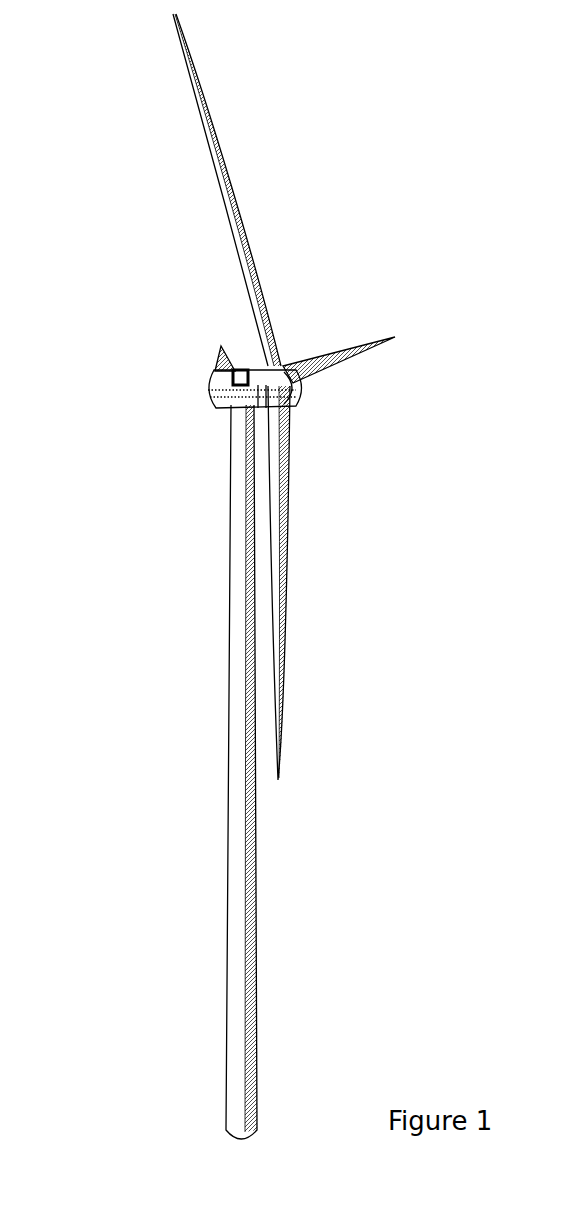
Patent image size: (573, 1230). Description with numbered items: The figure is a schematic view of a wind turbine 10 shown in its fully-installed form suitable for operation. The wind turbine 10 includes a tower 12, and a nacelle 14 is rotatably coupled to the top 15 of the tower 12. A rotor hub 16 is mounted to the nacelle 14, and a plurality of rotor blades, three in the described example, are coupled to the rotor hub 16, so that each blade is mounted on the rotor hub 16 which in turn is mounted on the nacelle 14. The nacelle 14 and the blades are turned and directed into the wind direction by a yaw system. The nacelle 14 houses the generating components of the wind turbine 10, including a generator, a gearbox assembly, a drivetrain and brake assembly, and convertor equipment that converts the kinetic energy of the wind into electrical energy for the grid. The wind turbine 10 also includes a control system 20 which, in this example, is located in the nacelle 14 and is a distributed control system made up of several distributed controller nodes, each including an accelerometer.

The wind turbine 10 is at (82, 554).
The tower 12 is at (257, 1037).
The nacelle 14 is at (210, 372).
The top of the tower 15 is at (238, 398).
The rotor hub 16 is at (290, 397).
The control system 20 is at (248, 378).